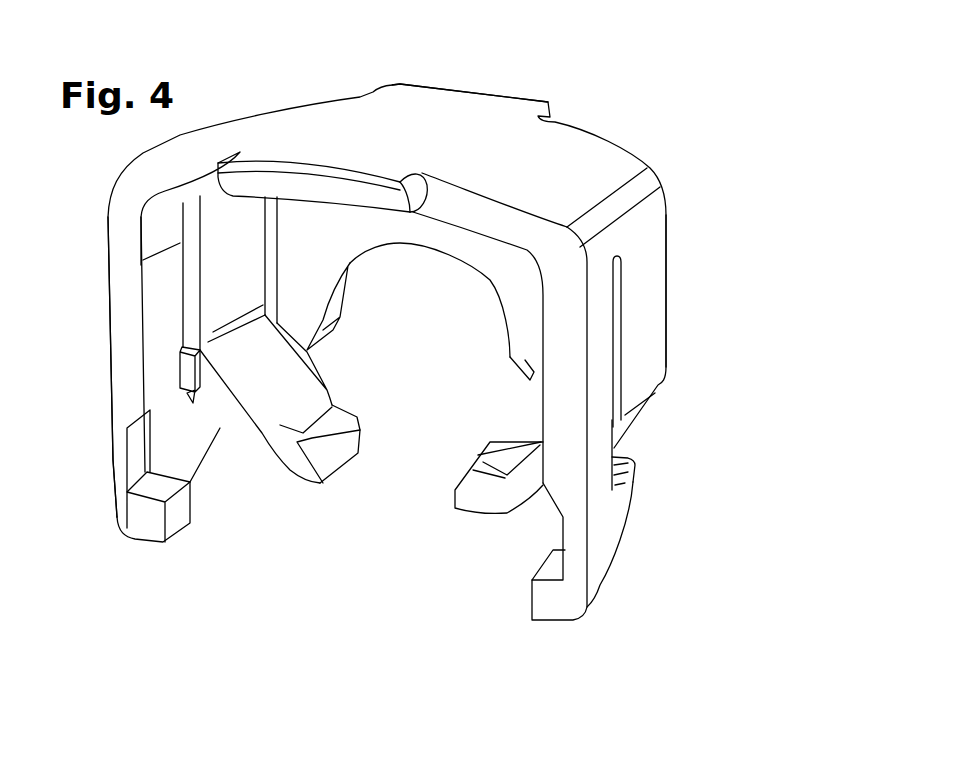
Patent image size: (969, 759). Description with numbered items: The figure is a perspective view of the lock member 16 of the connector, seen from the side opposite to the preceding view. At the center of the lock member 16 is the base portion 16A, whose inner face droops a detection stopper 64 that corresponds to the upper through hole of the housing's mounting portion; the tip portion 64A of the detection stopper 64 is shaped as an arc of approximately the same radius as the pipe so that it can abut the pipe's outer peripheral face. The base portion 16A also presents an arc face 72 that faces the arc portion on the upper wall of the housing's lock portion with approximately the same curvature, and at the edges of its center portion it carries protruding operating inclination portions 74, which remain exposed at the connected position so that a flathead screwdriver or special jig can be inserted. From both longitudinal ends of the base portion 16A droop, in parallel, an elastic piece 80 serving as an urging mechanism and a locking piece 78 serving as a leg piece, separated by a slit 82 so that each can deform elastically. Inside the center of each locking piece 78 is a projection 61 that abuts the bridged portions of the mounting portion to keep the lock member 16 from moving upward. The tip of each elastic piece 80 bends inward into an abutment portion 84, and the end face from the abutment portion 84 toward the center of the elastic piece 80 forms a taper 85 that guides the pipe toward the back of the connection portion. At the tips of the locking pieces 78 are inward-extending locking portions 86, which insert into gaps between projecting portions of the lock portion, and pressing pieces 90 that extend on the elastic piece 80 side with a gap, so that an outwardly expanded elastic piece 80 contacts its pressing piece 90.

The lock member 16 is at (566, 84).
The base portion 16A is at (438, 108).
The projection 61 is at (188, 378).
The detection stopper 64 is at (422, 250).
The tip portion 64A is at (330, 337).
The arc face 72 is at (458, 229).
The operating inclination portion 74 is at (316, 195).
The locking piece 78 is at (108, 270).
The elastic piece 80 is at (215, 300).
The slit 82 is at (617, 278).
The abutment portion 84 is at (343, 462).
The taper 85 is at (352, 410).
The locking portion 86 is at (181, 522).
The pressing piece 90 is at (207, 422).